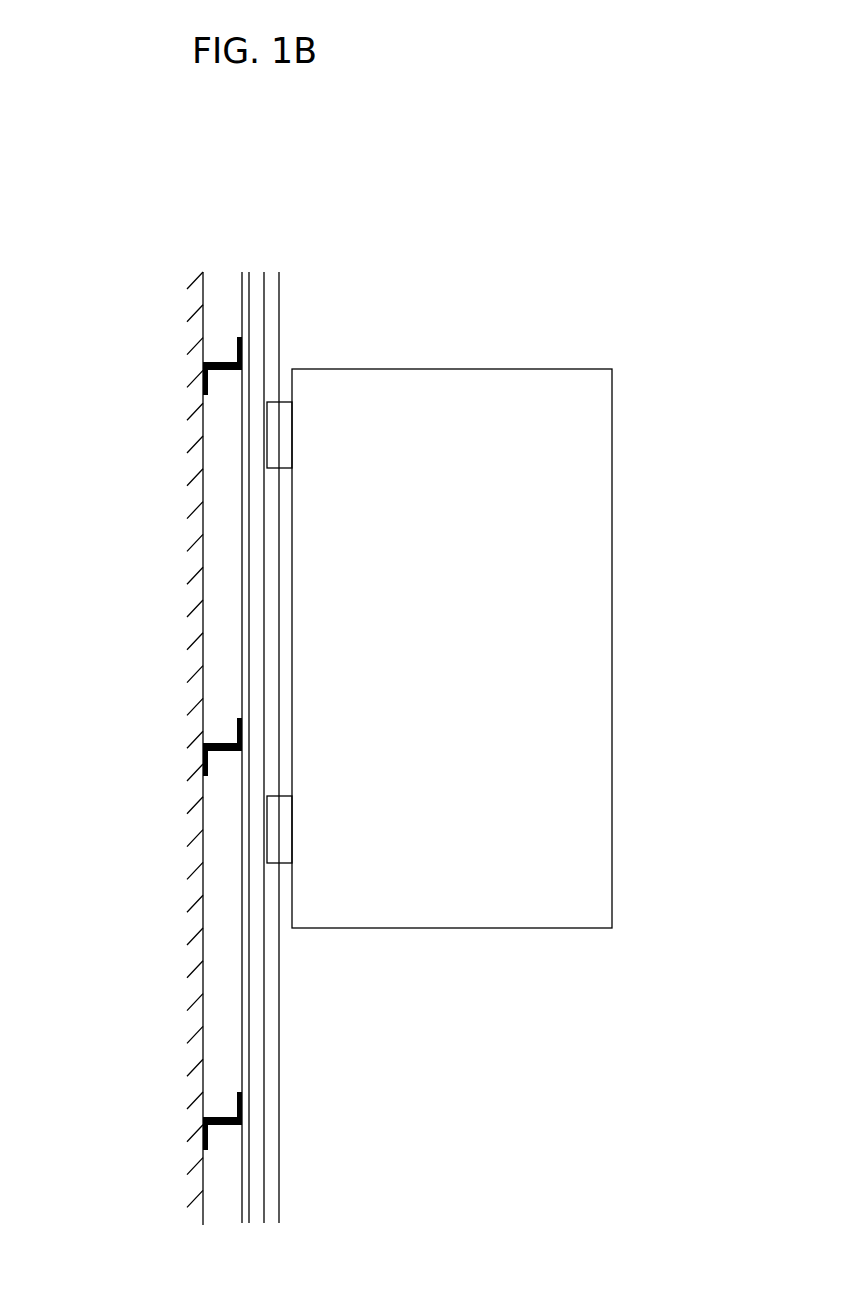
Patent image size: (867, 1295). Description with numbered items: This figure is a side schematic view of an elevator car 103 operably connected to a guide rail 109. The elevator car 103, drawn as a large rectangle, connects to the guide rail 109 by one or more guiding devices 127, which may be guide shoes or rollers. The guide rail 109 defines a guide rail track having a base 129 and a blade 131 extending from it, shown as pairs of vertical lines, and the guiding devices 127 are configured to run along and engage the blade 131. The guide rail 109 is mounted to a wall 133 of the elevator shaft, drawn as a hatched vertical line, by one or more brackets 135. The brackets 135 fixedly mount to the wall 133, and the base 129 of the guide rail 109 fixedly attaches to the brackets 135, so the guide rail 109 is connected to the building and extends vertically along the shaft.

The elevator car 103 is at (597, 476).
The guide rail 109 is at (259, 674).
The guiding devices 127 is at (283, 439).
The base 129 is at (247, 268).
The blade 131 is at (272, 268).
The wall 133 is at (198, 593).
The brackets 135 is at (221, 362).